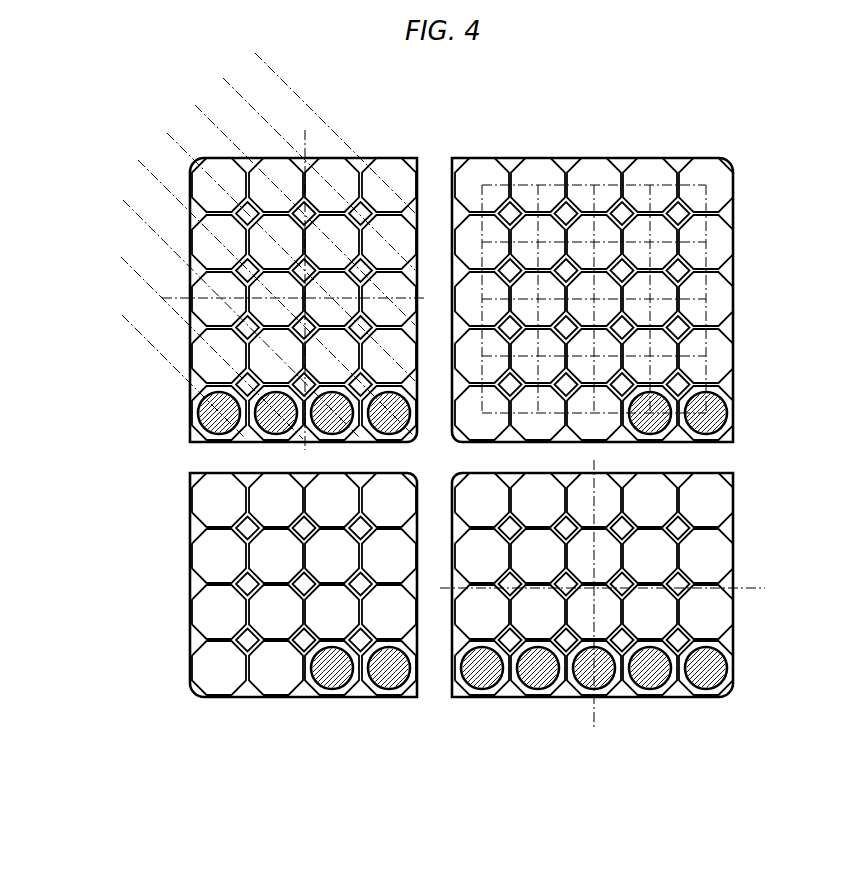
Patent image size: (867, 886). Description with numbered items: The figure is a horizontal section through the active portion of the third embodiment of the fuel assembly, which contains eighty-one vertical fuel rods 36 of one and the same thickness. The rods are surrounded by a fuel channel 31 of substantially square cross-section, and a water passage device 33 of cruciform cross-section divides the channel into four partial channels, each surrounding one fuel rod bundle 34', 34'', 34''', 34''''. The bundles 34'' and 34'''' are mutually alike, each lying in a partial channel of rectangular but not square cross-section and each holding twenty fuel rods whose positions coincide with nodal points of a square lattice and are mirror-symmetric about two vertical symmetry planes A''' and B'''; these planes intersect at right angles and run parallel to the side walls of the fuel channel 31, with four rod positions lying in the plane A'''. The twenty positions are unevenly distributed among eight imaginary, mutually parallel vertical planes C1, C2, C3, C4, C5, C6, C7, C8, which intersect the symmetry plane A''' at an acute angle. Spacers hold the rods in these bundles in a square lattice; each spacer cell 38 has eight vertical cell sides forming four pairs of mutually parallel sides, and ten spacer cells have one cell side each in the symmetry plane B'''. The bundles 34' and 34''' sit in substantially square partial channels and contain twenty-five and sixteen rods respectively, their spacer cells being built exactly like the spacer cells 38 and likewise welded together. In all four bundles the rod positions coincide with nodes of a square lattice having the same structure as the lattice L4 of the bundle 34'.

The fuel channel 31 is at (477, 141).
The water passage device 33 is at (418, 240).
The fuel rod bundle 34' is at (594, 253).
The fuel rod bundle 34'' is at (304, 245).
The fuel rod bundle 34''' is at (304, 642).
The fuel rod bundle 34'''' is at (592, 661).
The fuel rod 36 is at (487, 680).
The spacer cell 38 is at (733, 593).
The square lattice L4 is at (707, 318).
The imaginary vertical plane C1 is at (318, 115).
The imaginary vertical plane C2 is at (305, 158).
The imaginary vertical plane C3 is at (289, 199).
The imaginary vertical plane C4 is at (275, 240).
The imaginary vertical plane C5 is at (261, 281).
The imaginary vertical plane C6 is at (227, 304).
The imaginary vertical plane C7 is at (200, 332).
The imaginary vertical plane C8 is at (170, 360).
The vertical symmetry plane A''' is at (373, 526).
The vertical symmetry plane B''' is at (554, 351).